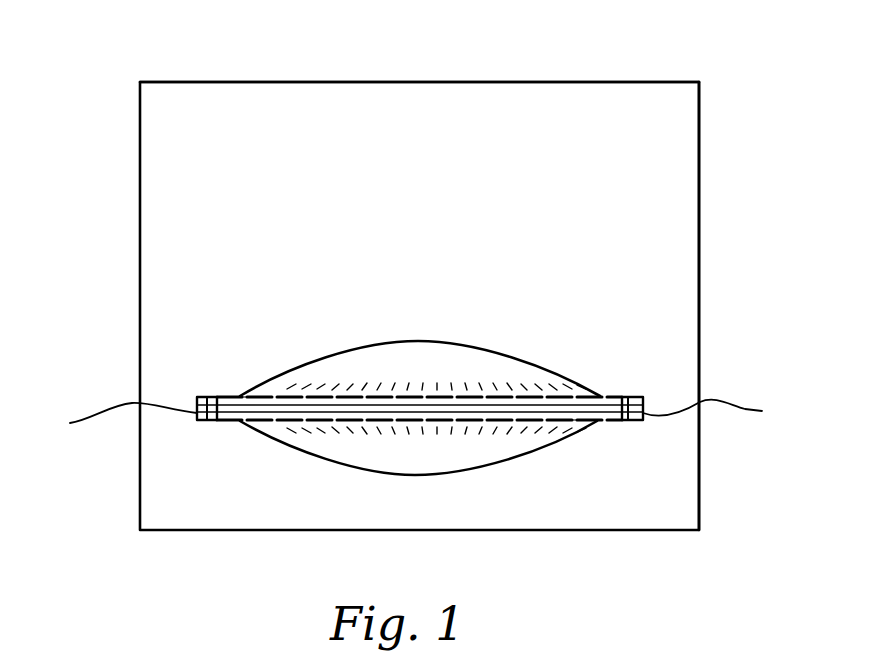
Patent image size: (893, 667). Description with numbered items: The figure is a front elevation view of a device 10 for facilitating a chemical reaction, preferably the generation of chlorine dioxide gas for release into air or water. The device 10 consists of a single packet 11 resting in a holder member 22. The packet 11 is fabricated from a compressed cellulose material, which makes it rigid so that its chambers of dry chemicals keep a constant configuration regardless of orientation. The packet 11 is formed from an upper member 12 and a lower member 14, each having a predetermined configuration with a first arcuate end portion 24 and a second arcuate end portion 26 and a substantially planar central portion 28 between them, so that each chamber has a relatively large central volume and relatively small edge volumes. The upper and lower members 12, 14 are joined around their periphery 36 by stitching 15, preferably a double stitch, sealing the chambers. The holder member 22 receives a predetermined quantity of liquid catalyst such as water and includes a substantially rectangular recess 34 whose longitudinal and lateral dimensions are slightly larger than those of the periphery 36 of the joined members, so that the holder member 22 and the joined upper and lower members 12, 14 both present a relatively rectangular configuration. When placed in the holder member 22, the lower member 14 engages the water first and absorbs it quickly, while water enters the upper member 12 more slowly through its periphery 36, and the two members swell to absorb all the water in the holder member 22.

The device 10 is at (152, 548).
The packet 11 is at (342, 268).
The upper member 12 is at (410, 352).
The lower member 14 is at (508, 447).
The stitching 15 is at (217, 397).
The holder member 22 is at (699, 353).
The first arcuate end portion 24 is at (266, 396).
The second arcuate end portion 26 is at (579, 396).
The central portion 28 is at (447, 342).
The recess 34 is at (628, 120).
The periphery 36 is at (412, 419).